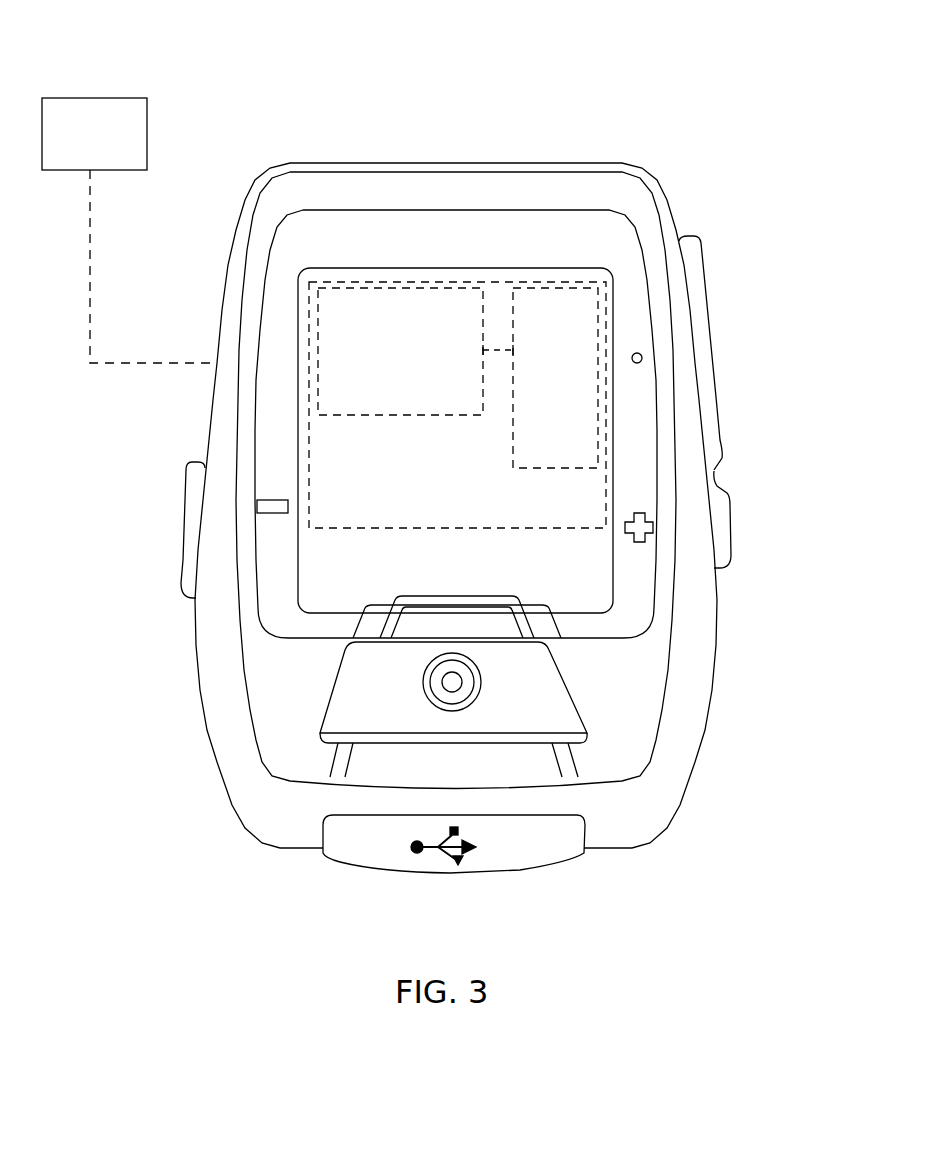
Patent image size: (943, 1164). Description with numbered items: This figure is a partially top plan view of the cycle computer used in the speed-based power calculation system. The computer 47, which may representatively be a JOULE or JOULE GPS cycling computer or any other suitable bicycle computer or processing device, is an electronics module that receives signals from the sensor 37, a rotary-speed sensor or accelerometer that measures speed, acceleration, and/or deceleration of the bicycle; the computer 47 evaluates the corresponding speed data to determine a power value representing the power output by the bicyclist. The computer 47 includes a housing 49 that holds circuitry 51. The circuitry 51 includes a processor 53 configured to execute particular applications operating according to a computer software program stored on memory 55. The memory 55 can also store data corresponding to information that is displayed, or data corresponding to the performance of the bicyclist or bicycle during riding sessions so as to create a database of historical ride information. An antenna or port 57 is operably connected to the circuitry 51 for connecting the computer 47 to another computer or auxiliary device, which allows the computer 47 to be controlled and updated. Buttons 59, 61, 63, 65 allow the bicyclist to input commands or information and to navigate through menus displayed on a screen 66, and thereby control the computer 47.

The sensor 37 is at (127, 117).
The computer 47 is at (662, 144).
The housing 49 is at (256, 803).
The circuitry 51 is at (563, 511).
The processor 53 is at (378, 360).
The memory 55 is at (539, 373).
The antenna or port 57 is at (535, 855).
The button 59 is at (553, 693).
The button 61 is at (731, 533).
The button 63 is at (714, 397).
The button 65 is at (184, 566).
The screen 66 is at (320, 593).